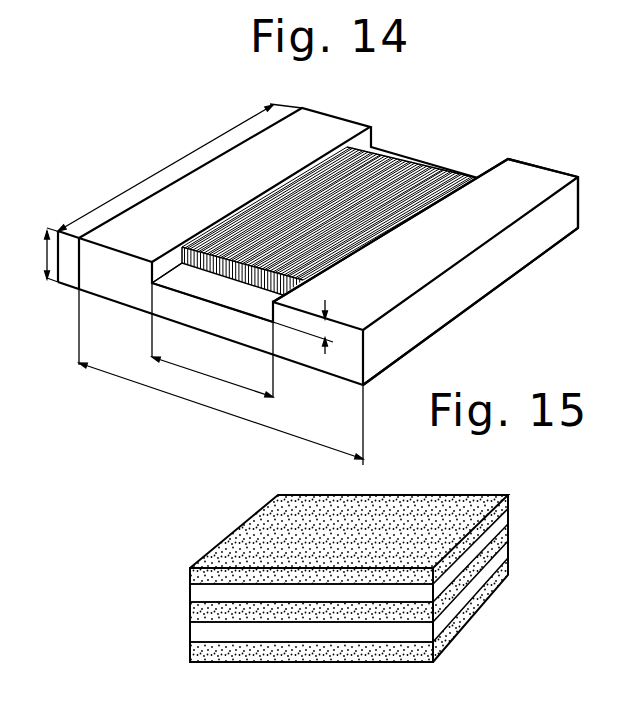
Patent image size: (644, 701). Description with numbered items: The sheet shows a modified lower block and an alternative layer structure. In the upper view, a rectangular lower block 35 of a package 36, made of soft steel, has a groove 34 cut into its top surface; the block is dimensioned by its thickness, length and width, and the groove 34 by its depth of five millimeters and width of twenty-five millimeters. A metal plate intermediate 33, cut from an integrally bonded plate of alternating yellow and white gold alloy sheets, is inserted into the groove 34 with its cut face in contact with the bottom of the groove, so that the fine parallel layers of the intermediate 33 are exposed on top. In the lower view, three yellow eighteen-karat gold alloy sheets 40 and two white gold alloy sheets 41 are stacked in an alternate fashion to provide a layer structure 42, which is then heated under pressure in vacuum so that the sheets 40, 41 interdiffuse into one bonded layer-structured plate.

In FIG. 14, the metal plate intermediate 33 is at (427, 163).
In FIG. 14, the groove 34 is at (175, 278).
In FIG. 14, the lower block 35 is at (518, 253).
In FIG. 14, the package 36 is at (530, 160).
In FIG. 15, the gold alloy sheets 40 is at (510, 510).
In FIG. 15, the gold alloy sheets 41 is at (505, 527).
In FIG. 15, the layer structure 42 is at (388, 553).